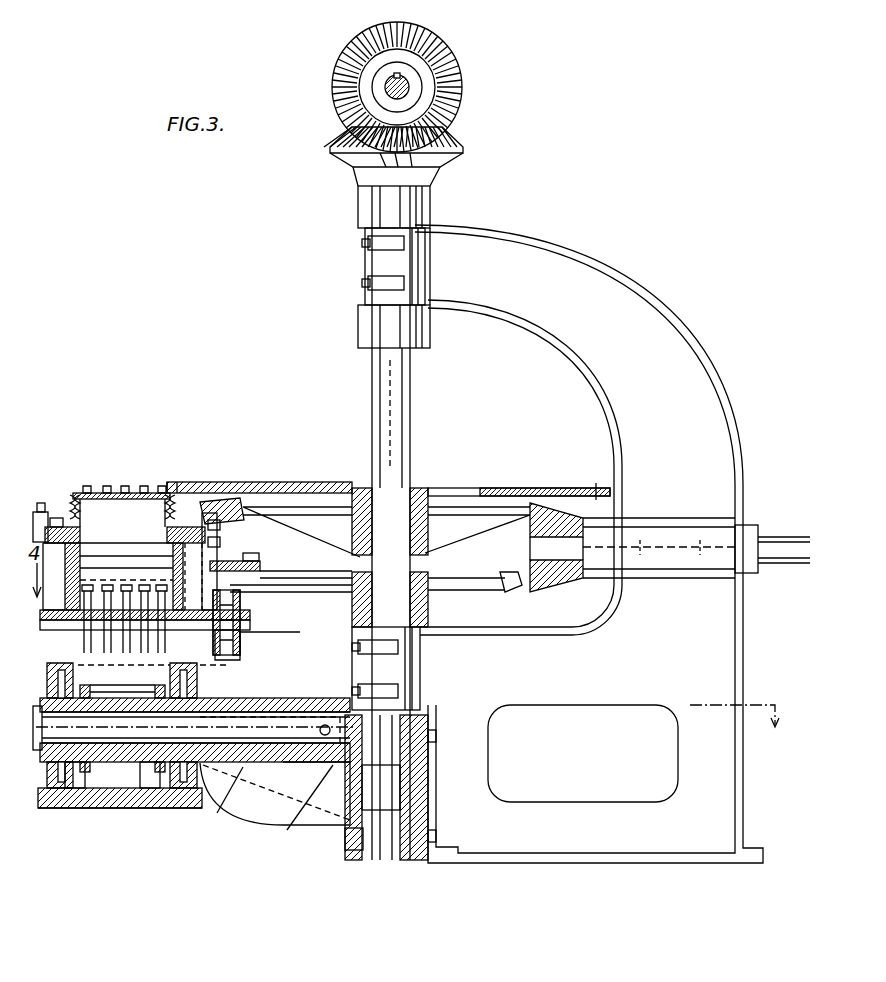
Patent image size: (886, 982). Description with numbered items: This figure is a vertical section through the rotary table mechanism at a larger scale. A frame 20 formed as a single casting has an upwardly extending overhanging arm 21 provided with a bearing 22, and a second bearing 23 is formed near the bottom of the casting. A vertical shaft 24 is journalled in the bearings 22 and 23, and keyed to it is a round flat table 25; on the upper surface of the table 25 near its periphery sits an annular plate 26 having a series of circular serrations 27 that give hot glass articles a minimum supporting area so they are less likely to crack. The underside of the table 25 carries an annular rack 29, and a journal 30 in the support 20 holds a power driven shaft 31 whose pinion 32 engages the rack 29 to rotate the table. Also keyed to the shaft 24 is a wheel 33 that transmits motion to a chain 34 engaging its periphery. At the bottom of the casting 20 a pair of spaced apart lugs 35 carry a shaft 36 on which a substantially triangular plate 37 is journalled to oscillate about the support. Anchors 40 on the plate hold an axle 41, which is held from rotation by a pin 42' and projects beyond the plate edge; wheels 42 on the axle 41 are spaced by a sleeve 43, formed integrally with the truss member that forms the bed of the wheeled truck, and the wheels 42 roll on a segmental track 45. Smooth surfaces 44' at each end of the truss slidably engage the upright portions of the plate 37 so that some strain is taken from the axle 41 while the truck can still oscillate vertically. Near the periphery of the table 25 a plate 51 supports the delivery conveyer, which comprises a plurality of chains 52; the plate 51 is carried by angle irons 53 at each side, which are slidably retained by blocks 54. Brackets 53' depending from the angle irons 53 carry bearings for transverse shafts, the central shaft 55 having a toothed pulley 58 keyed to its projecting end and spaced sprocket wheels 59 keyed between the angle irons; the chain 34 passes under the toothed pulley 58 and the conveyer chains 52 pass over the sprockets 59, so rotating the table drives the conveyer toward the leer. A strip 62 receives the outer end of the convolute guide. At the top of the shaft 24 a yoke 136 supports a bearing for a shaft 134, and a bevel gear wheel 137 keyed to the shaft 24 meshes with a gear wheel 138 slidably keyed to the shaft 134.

The frame 20 is at (713, 612).
The overhanging arm 21 is at (607, 270).
The bearing 22 is at (378, 262).
The bearing 23 is at (422, 688).
The vertical shaft 24 is at (405, 420).
The round flat table 25 is at (464, 490).
The annular plate 26 is at (555, 490).
The circular serrations 27 is at (603, 496).
The annular rack 29 is at (252, 492).
The journal 30 is at (615, 528).
The power driven shaft 31 is at (790, 528).
The pinion 32 is at (556, 585).
The wheel 33 is at (475, 600).
The chain 34 is at (520, 590).
The lugs 35 is at (352, 852).
The shaft 36 is at (385, 805).
The triangular shaped plate 37 is at (240, 775).
The anchors 40 is at (328, 700).
The axle 41 is at (280, 712).
The wheels 42 is at (123, 801).
The pin 42' is at (269, 790).
The sleeve 43 is at (130, 808).
The smooth surfaces 44' is at (170, 685).
The segmental track 45 is at (110, 808).
The plate 51 is at (122, 488).
The chains 52 is at (146, 486).
The angle irons 53 is at (149, 477).
The brackets 53' is at (126, 553).
The blocks 54 is at (58, 512).
The central shaft 55 is at (240, 640).
The toothed pulley 58 is at (240, 650).
The sprocket wheels 59 is at (75, 640).
The strip 62 is at (185, 482).
The shaft 134 is at (406, 86).
The yoke 136 is at (368, 335).
The bevel gear wheel 137 is at (458, 143).
The gear wheel 138 is at (432, 45).